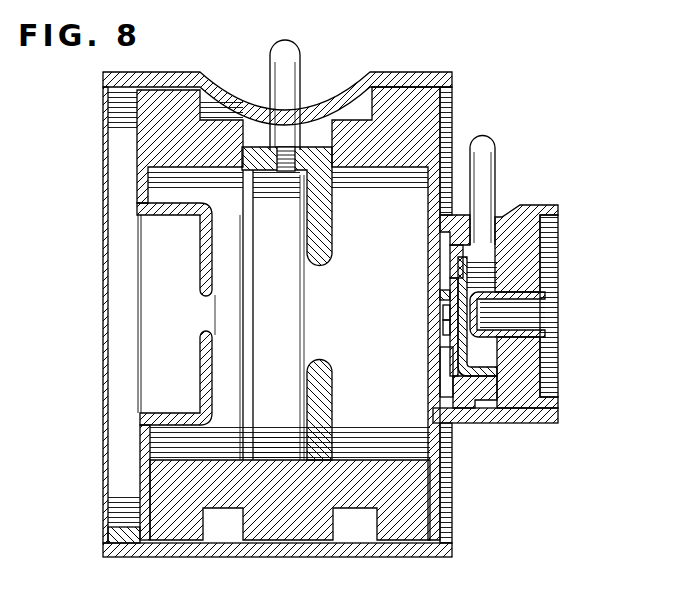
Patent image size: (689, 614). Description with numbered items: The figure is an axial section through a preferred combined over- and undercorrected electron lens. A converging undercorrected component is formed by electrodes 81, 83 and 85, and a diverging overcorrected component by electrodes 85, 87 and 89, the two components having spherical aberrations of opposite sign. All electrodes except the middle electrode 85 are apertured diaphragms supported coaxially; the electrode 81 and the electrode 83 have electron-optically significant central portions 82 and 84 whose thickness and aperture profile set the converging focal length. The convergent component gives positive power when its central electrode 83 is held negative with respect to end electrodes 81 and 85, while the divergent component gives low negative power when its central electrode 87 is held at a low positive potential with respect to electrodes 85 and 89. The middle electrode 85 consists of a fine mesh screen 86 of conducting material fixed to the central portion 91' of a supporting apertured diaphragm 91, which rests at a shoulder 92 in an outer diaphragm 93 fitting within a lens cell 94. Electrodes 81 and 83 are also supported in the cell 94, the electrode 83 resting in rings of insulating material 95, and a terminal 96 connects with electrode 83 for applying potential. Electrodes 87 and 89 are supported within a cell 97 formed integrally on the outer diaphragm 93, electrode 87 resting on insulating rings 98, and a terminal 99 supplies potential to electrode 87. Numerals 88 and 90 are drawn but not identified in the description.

The electrode 81 is at (197, 273).
The central portion 82 is at (206, 371).
The central electrode 83 is at (306, 233).
The central portion 84 is at (332, 252).
The middle electrode 85 is at (446, 317).
The fine mesh screen 86 is at (444, 322).
The central electrode 87 is at (469, 275).
The lower block 88 is at (462, 354).
The electrode 89 is at (545, 292).
The tube 90 is at (488, 328).
The supporting apertured diaphragm 91 is at (426, 310).
The central portion 91' is at (418, 292).
The shoulder 92 is at (428, 228).
The outer diaphragm 93 is at (437, 172).
The lens cell 94 is at (403, 74).
The rings of insulating material 95 is at (225, 497).
The terminal 96 is at (291, 55).
The cell 97 is at (533, 422).
The insulating rings 98 is at (485, 412).
The terminal 99 is at (488, 175).